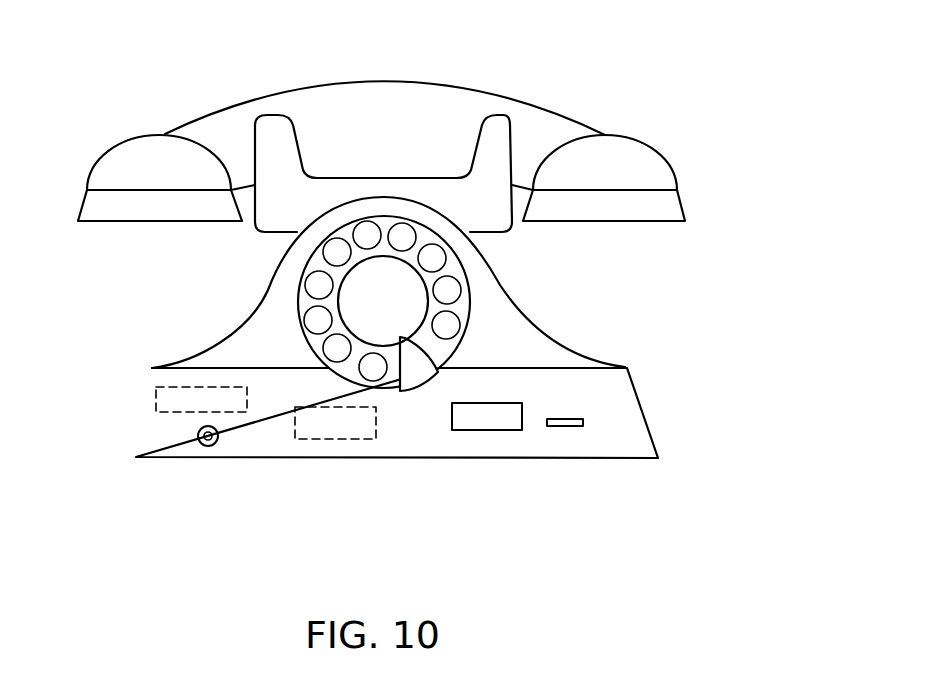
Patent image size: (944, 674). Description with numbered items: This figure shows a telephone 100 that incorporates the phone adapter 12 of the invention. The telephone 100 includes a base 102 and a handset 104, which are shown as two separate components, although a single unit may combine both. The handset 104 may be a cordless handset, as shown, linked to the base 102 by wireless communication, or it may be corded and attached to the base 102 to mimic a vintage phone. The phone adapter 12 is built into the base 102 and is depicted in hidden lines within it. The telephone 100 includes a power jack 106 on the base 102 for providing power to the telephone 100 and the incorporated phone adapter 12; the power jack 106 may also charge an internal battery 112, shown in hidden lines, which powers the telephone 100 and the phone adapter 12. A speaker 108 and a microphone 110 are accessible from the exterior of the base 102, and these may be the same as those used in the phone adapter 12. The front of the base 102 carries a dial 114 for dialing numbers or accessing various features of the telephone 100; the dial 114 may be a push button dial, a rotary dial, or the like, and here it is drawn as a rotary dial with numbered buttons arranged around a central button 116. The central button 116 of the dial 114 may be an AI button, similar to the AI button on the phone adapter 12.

The telephone 100 is at (663, 88).
The base 102 is at (653, 413).
The handset 104 is at (457, 87).
The power jack 106 is at (197, 442).
The speaker 108 is at (490, 432).
The microphone 110 is at (565, 427).
The internal battery 112 is at (145, 393).
The dial 114 is at (457, 255).
The central button 116 is at (388, 323).
The phone adapter 12 is at (332, 442).